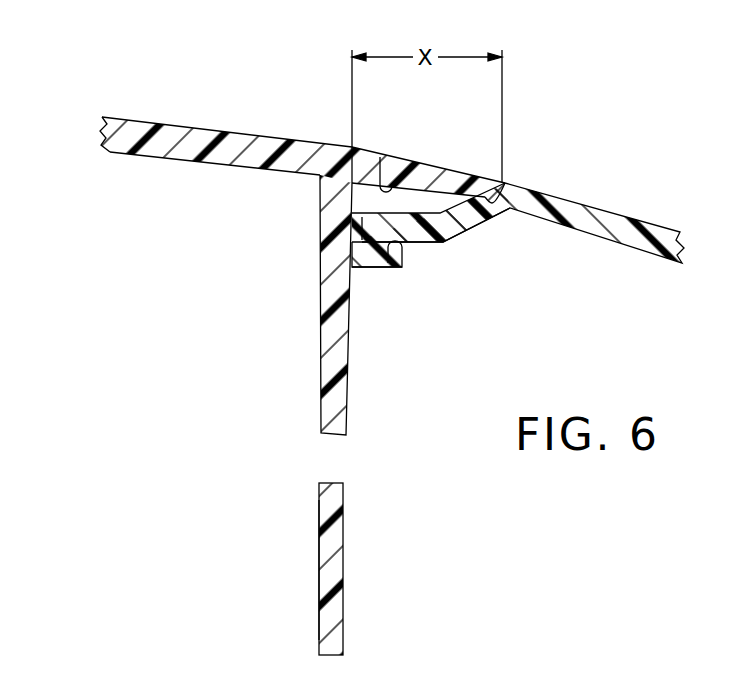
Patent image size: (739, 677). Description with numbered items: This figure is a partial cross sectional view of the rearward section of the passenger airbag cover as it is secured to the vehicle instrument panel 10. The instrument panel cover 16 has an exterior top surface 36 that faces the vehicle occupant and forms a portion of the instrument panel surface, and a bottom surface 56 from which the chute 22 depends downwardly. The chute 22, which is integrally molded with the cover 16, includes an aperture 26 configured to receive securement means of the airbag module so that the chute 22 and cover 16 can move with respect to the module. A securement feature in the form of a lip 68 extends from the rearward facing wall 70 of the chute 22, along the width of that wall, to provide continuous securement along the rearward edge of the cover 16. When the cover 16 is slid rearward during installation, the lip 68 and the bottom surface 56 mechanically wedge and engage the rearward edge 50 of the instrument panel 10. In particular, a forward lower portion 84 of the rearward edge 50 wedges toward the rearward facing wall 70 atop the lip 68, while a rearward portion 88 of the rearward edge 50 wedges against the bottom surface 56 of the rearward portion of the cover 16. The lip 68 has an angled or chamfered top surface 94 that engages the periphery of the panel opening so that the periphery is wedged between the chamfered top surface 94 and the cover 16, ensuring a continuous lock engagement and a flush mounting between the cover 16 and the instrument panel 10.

The instrument panel 10 is at (606, 197).
The instrument panel cover 16 is at (186, 112).
The chute 22 is at (318, 353).
The apertures 26 is at (330, 483).
The top surface 36 is at (150, 118).
The rearward edge 50 is at (432, 243).
The bottom surface 56 is at (392, 155).
The lip 68 is at (363, 268).
The rearward facing wall 70 is at (319, 577).
The forward lower portion 84 is at (373, 222).
The rearward portion 88 is at (493, 176).
The chamfered top surface 94 is at (395, 266).